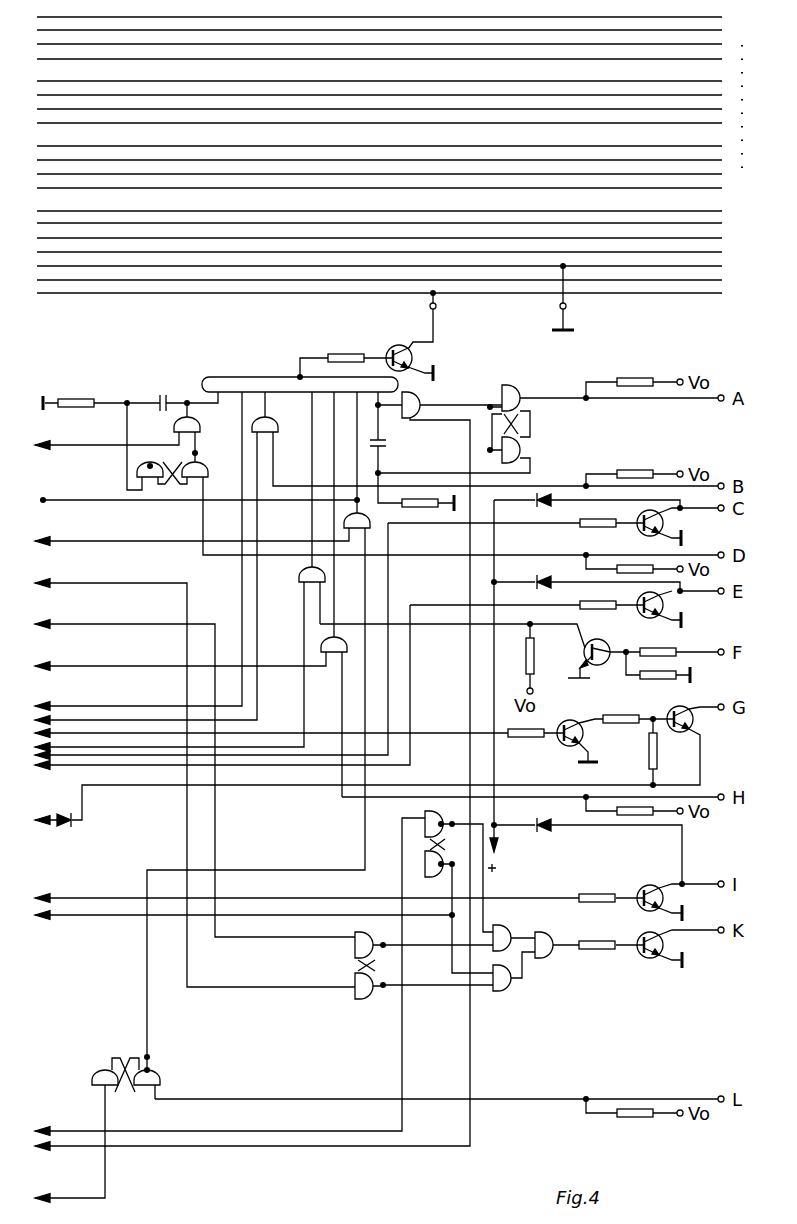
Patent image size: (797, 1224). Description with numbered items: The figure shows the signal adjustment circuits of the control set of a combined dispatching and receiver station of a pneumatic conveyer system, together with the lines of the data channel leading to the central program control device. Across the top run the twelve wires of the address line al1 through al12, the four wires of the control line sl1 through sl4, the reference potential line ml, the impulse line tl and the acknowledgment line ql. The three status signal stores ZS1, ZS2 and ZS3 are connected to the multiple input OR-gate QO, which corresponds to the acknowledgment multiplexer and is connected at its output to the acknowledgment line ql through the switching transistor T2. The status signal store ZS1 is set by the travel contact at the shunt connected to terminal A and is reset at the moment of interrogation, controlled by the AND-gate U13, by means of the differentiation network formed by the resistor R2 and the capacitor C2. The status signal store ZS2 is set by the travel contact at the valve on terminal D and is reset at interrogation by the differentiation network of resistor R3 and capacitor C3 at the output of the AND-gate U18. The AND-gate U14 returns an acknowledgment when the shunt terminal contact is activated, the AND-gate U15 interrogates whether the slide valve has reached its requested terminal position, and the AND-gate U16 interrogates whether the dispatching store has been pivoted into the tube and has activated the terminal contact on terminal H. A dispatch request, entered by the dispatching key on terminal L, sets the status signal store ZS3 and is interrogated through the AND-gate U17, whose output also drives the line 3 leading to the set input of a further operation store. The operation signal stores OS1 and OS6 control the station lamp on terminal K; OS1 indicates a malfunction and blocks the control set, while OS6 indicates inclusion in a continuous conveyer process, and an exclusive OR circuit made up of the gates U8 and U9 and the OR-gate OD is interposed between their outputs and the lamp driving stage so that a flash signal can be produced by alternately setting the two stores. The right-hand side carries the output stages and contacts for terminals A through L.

The address line wire al1 is at (722, 18).
The address line wire al12 is at (733, 191).
The control line wire sl1 is at (722, 211).
The control line wire sl4 is at (722, 252).
The reference potential line ml is at (722, 266).
The impulse line tl is at (722, 280).
The acknowledgment line ql is at (722, 293).
The resistor of differentiation network R3 is at (80, 399).
The capacitor of differentiation network C3 is at (163, 395).
The multiple input OR-gate QO is at (247, 377).
The switching transistor T2 is at (390, 348).
The AND-gate U18 is at (198, 420).
The AND-gate U14 is at (278, 420).
The AND-gate U13 is at (414, 420).
The capacitor of differentiation network C2 is at (386, 446).
The status signal store ZS1 is at (520, 430).
The status signal store ZS2 is at (150, 466).
The line 3 is at (44, 503).
The AND-gate U17 is at (345, 515).
The resistor of differentiation network R2 is at (420, 507).
The AND-gate U15 is at (306, 570).
The AND-gate U16 is at (325, 642).
The operation signal store OS1 is at (425, 845).
The AND-gate of exclusive OR circuit U8 is at (512, 921).
The AND-gate of exclusive OR circuit U9 is at (509, 992).
The OR-gate of exclusive OR circuit OD is at (548, 958).
The operation signal store OS6 is at (352, 962).
The status signal store ZS3 is at (125, 1062).